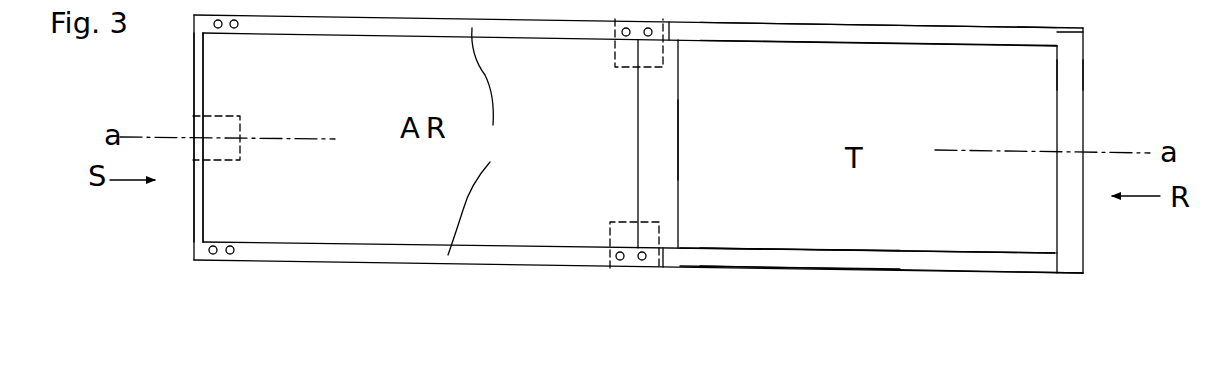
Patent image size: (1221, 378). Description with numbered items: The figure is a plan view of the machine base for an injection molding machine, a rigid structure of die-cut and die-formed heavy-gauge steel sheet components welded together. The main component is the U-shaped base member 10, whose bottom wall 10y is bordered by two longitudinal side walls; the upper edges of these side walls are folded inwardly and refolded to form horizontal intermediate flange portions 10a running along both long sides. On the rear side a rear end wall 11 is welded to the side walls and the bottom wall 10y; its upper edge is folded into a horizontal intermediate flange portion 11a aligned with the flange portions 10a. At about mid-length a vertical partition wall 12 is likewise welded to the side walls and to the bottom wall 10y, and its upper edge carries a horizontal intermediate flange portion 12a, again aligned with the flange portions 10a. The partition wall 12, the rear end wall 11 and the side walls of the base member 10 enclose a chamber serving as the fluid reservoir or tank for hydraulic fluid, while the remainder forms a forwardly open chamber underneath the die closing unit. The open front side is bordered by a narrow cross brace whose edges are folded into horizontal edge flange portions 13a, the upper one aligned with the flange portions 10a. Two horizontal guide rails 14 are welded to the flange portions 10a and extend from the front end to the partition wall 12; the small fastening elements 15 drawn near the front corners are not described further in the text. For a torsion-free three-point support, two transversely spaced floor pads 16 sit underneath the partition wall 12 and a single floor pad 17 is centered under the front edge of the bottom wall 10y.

The base member 10 is at (842, 270).
The intermediate flange portions 10a is at (860, 37).
The bottom wall 10y is at (763, 225).
The rear end wall 11 is at (1056, 123).
The horizontal intermediate flange portion 11a is at (1068, 71).
The partition wall 12 is at (636, 137).
The horizontal intermediate flange portion 12a is at (663, 136).
The horizontal edge flange portions 13a is at (200, 208).
The guide rails 14 is at (481, 141).
The bolts 15 is at (220, 27).
The floor pads 16 is at (628, 70).
The floor pad 17 is at (222, 122).